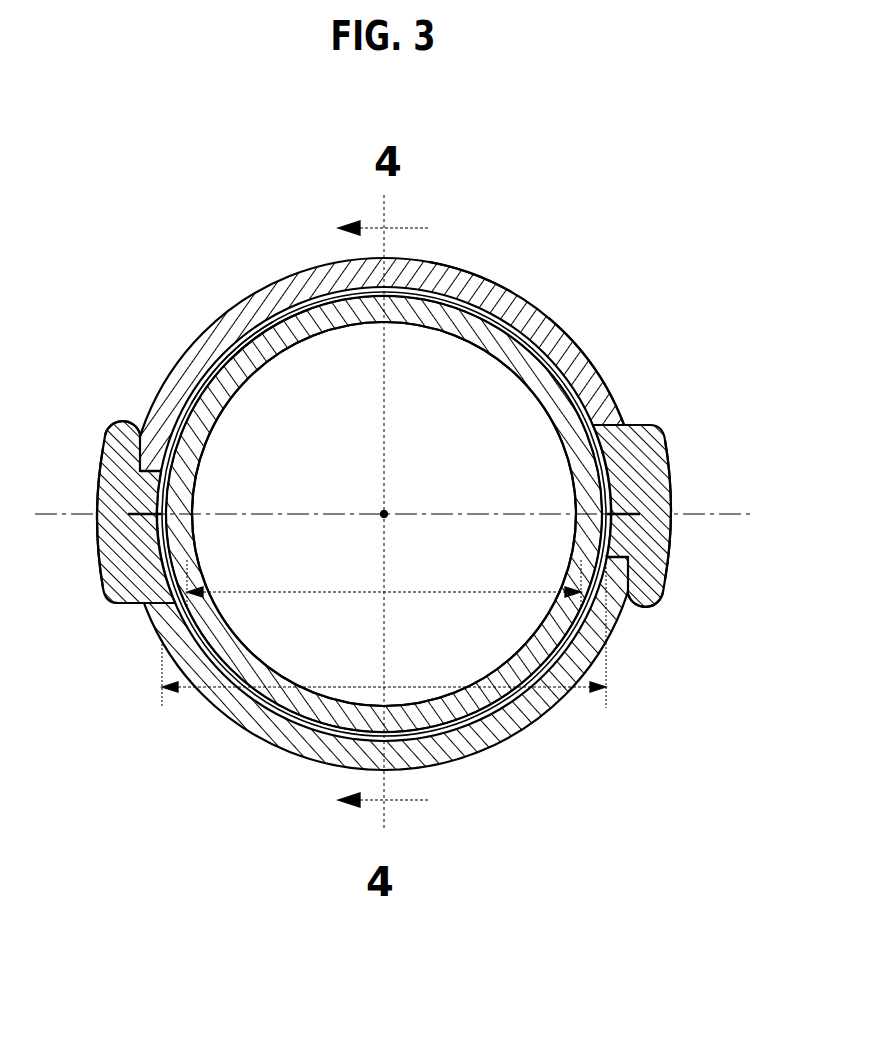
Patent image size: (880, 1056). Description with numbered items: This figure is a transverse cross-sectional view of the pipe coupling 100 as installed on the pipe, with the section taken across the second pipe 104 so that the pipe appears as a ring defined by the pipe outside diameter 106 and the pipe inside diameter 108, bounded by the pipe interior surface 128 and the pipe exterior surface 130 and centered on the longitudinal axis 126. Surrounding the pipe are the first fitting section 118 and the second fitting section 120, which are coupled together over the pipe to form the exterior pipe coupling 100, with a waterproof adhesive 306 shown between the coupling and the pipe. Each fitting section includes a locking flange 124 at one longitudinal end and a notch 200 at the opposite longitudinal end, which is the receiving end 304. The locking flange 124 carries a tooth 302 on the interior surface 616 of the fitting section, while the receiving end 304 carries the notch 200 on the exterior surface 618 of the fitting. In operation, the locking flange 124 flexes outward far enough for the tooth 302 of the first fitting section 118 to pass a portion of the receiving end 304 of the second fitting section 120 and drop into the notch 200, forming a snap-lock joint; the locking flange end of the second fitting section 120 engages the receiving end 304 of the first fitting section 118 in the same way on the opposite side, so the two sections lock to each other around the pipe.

The pipe coupling 100 is at (521, 179).
The second pipe 104 is at (525, 350).
The pipe outside diameter 106 is at (333, 684).
The pipe inside diameter 108 is at (333, 588).
The first fitting section 118 is at (532, 300).
The second fitting section 120 is at (452, 758).
The locking flange 124 is at (118, 420).
The longitudinal axis 126 is at (390, 520).
The pipe interior surface 128 is at (329, 348).
The pipe exterior surface 130 is at (479, 282).
The notch 200 is at (148, 420).
The tooth 302 is at (100, 447).
The receiving end 304 is at (150, 500).
The waterproof adhesive 306 is at (195, 403).
The interior surface 616 is at (253, 361).
The exterior surface 618 is at (612, 359).